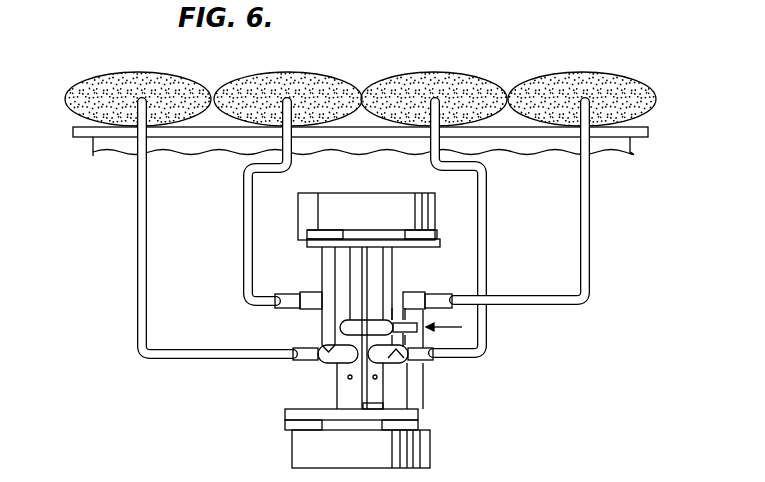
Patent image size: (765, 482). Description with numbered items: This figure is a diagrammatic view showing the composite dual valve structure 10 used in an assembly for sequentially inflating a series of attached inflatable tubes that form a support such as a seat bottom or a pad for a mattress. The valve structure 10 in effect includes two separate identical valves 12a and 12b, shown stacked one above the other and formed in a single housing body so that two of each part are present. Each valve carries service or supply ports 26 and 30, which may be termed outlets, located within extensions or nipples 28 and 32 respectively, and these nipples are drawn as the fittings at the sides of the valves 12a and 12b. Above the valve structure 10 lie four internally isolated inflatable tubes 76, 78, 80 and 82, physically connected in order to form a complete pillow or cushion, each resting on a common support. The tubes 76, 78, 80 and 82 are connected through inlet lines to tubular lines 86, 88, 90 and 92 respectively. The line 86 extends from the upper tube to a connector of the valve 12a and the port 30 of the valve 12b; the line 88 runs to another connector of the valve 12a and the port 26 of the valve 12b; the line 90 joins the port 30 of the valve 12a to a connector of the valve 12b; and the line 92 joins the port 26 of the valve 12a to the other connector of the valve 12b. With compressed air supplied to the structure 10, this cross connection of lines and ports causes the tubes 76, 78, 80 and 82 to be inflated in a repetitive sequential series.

The valve structure 10 is at (434, 399).
The valve 12a is at (292, 439).
The valve 12b is at (409, 182).
The supply port 26 is at (276, 307).
The nipple 28 is at (287, 296).
The supply port 30 is at (285, 362).
The nipple 32 is at (303, 360).
The inflatable tube 76 is at (153, 84).
The inflatable tube 78 is at (271, 82).
The inflatable tube 80 is at (414, 82).
The inflatable tube 82 is at (574, 83).
The tubular line 86 is at (242, 228).
The tubular line 88 is at (142, 201).
The tubular line 90 is at (486, 199).
The tubular line 92 is at (583, 228).